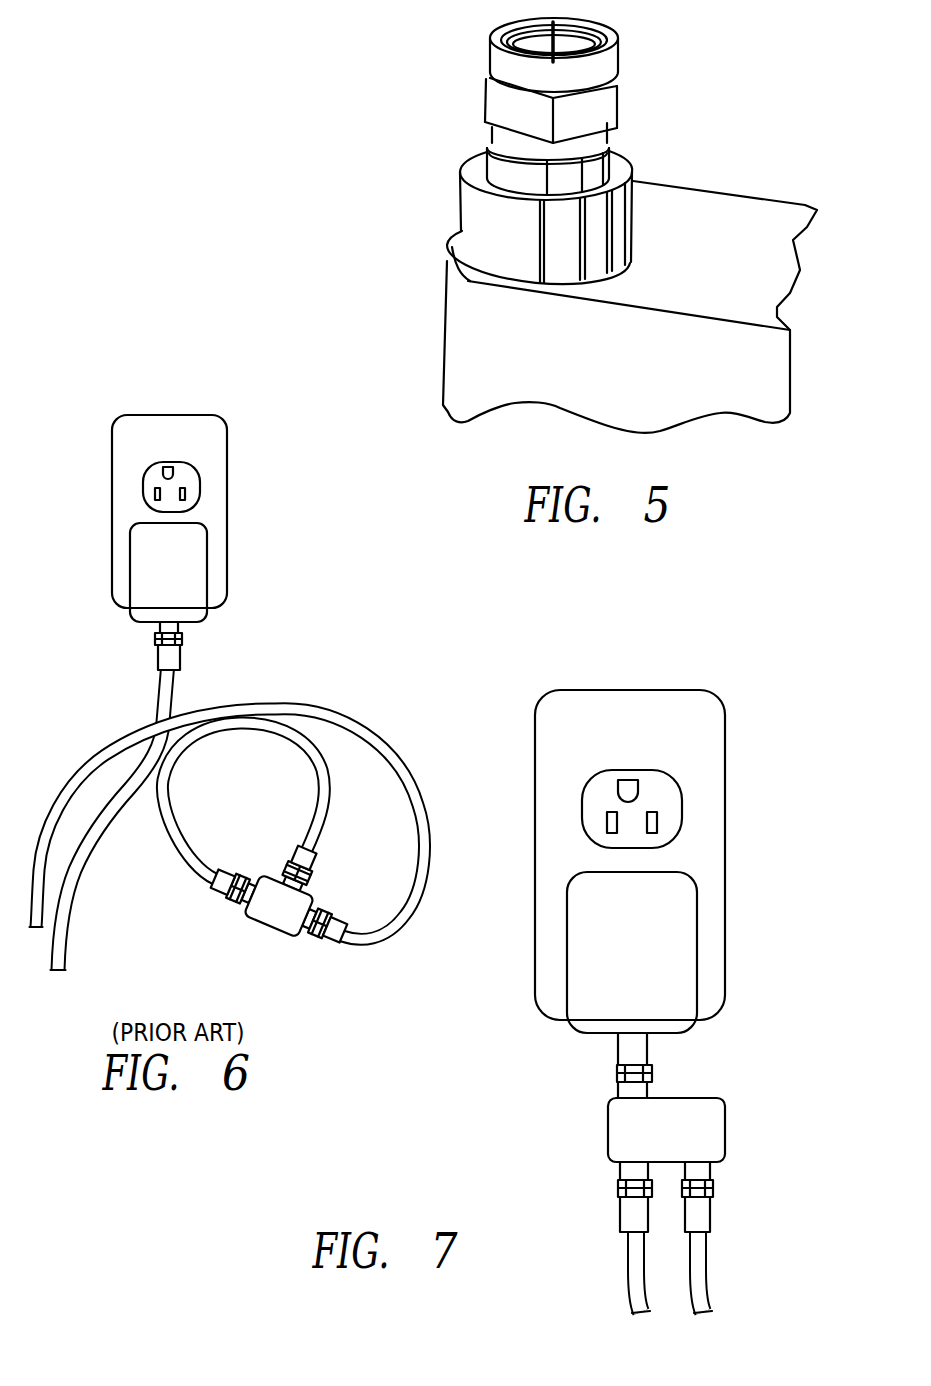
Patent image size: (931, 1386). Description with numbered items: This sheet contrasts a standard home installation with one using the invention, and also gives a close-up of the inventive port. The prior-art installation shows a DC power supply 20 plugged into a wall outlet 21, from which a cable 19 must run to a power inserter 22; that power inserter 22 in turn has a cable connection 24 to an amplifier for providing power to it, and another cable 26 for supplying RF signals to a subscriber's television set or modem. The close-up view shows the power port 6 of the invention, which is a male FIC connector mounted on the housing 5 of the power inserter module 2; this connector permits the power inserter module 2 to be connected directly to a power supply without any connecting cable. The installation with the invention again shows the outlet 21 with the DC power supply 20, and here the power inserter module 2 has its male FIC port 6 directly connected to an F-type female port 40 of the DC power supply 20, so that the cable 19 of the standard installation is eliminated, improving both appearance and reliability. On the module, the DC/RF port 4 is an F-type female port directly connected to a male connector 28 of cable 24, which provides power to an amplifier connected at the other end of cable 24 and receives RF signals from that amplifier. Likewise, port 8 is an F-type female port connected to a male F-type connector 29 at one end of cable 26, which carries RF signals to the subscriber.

In FIG. 5, the power inserter module 2 is at (509, 349).
In FIG. 7, the power inserter module 2 is at (631, 1146).
In FIG. 7, the DC/RF port 4 is at (618, 1167).
In FIG. 5, the housing 5 is at (434, 331).
In FIG. 7, the housing 5 is at (733, 1101).
In FIG. 5, the power port 6 is at (476, 89).
In FIG. 7, the power port 6 is at (616, 1083).
In FIG. 7, the port 8 is at (713, 1168).
In FIG. 6, the cable 19 is at (157, 700).
In FIG. 6, the DC power supply 20 is at (130, 563).
In FIG. 7, the DC power supply 20 is at (697, 913).
In FIG. 6, the electrical outlet 21 is at (200, 482).
In FIG. 7, the electrical outlet 21 is at (682, 807).
In FIG. 6, the power inserter 22 is at (282, 910).
In FIG. 6, the cable 24 is at (346, 717).
In FIG. 7, the cable 24 is at (626, 1267).
In FIG. 6, the cable 26 is at (330, 810).
In FIG. 7, the cable 26 is at (711, 1260).
In FIG. 7, the male connector 28 is at (618, 1208).
In FIG. 7, the male F-type connector 29 is at (712, 1210).
In FIG. 7, the F-type female port 40 is at (648, 1053).